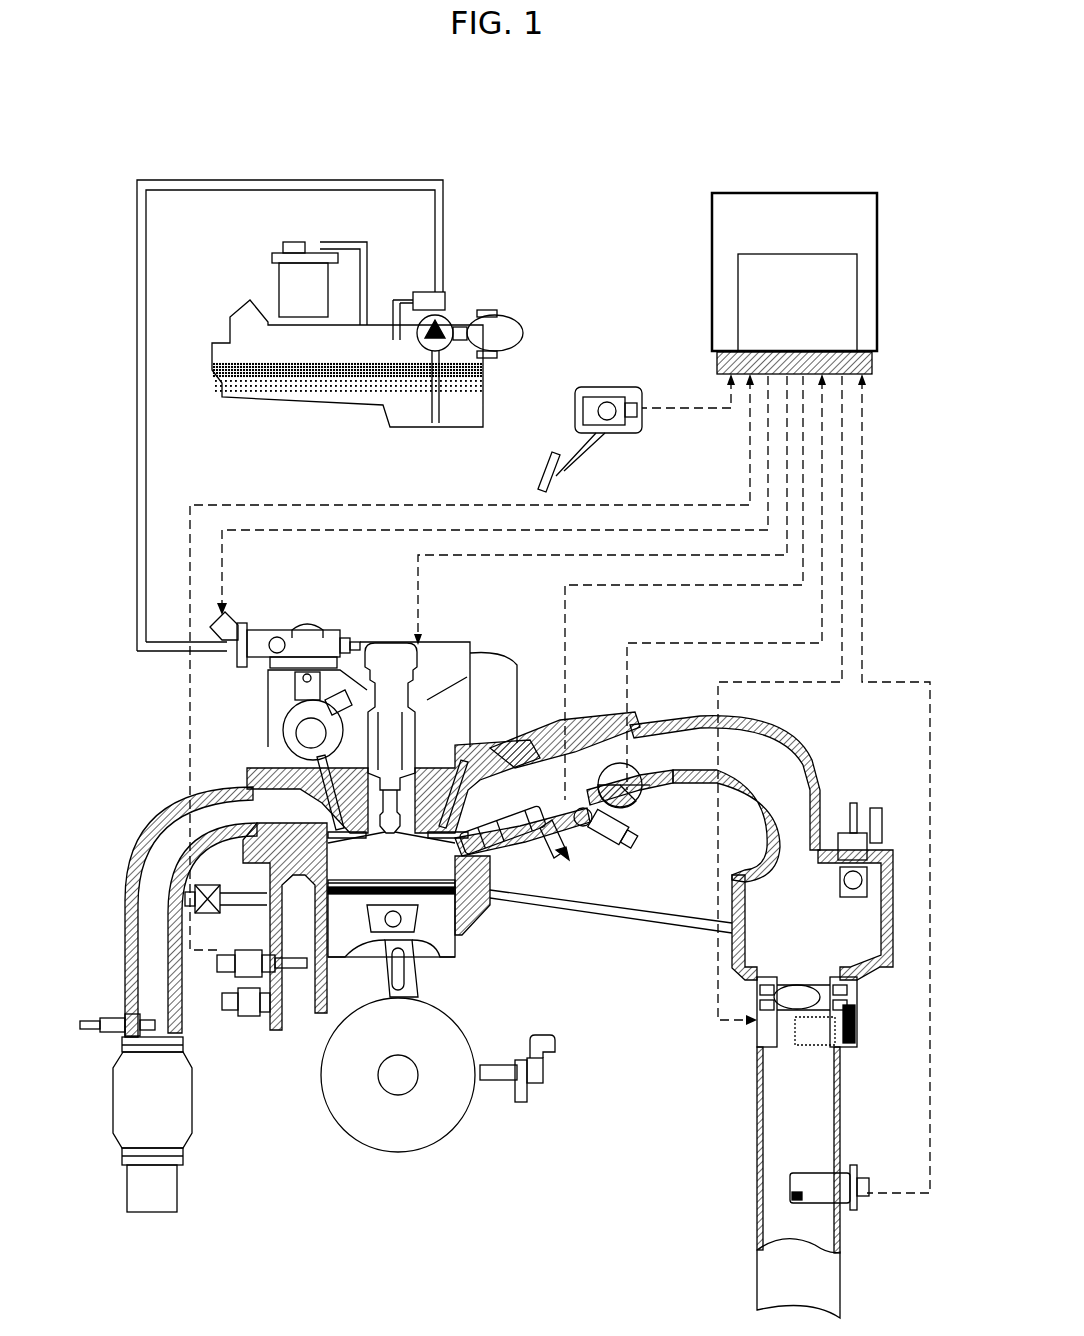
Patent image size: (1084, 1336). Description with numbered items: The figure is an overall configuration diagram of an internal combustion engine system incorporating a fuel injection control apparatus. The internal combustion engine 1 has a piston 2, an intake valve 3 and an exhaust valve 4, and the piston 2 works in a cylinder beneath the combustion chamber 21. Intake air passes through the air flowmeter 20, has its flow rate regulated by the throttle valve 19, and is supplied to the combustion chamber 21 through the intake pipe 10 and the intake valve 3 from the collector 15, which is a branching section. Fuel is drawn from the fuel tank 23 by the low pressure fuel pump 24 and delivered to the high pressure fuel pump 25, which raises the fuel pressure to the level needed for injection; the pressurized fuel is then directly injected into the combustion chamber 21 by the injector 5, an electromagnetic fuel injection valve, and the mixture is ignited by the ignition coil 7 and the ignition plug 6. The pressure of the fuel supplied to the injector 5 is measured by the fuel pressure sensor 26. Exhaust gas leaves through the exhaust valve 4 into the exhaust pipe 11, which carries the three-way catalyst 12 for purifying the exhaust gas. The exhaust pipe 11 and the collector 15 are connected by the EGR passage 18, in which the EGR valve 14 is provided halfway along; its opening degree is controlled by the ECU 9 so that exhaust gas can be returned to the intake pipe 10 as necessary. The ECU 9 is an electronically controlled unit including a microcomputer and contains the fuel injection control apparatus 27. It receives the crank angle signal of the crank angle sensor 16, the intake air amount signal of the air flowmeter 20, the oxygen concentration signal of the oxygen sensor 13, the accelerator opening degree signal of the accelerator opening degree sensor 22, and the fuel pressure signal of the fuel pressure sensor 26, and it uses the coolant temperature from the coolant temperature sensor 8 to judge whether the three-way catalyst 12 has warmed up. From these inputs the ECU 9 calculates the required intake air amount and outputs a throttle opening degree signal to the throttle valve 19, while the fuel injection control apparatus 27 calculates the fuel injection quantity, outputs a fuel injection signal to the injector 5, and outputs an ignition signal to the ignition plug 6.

The internal combustion engine 1 is at (490, 876).
The piston 2 is at (447, 940).
The intake valve 3 is at (443, 772).
The exhaust valve 4 is at (237, 790).
The injector 5 is at (570, 858).
The ignition plug 6 is at (392, 836).
The ignition coil 7 is at (390, 655).
The coolant temperature sensor 8 is at (297, 978).
The ECU 9 is at (792, 193).
The intake pipe 10 is at (595, 762).
The exhaust pipe 11 is at (150, 833).
The three-way catalyst 12 is at (195, 1098).
The oxygen sensor 13 is at (100, 1035).
The EGR valve 14 is at (207, 915).
The collector 15 is at (742, 862).
The crank angle sensor 16 is at (557, 1058).
The EGR passage 18 is at (646, 930).
The throttle valve 19 is at (858, 1027).
The air flowmeter 20 is at (860, 1203).
The combustion chamber 21 is at (482, 902).
The accelerator opening degree sensor 22 is at (603, 387).
The fuel tank 23 is at (348, 395).
The low pressure fuel pump 24 is at (458, 318).
The high pressure fuel pump 25 is at (307, 630).
The fuel pressure sensor 26 is at (645, 838).
The fuel injection control apparatus 27 is at (738, 290).